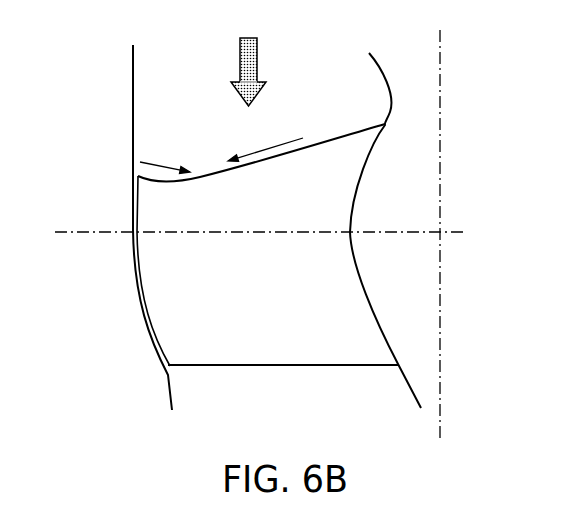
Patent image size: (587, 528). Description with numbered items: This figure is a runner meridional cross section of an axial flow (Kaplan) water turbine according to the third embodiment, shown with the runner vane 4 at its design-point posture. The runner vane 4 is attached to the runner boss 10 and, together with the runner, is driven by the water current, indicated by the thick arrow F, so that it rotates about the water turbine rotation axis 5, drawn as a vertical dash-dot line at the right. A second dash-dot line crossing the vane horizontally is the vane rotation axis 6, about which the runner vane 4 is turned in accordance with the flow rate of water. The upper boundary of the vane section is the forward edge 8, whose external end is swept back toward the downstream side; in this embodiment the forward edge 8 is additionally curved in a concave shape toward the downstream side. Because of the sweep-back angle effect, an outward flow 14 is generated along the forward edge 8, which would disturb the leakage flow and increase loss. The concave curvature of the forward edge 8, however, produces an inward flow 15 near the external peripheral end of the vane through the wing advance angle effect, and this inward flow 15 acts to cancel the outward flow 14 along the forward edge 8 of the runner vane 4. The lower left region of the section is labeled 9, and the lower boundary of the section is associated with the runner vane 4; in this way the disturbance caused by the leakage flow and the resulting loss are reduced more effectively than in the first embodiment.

The runner vane 4 is at (280, 355).
The water turbine rotation axis 5 is at (441, 122).
The vane rotation axis 6 is at (397, 228).
The forward edge 8 is at (336, 135).
The leading edge side wall 9 is at (155, 398).
The runner boss 10 is at (418, 378).
The outward flow 14 is at (289, 140).
The inward flow 15 is at (163, 168).
The water current (main flow) F is at (259, 46).